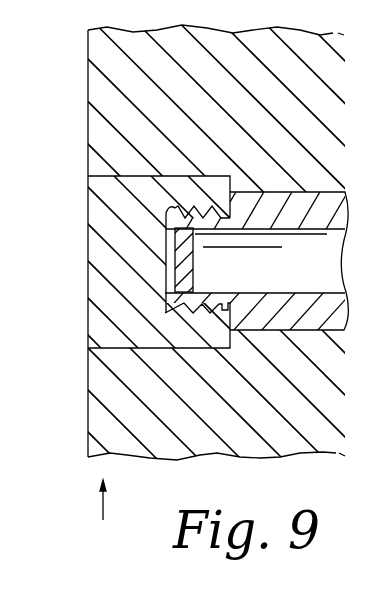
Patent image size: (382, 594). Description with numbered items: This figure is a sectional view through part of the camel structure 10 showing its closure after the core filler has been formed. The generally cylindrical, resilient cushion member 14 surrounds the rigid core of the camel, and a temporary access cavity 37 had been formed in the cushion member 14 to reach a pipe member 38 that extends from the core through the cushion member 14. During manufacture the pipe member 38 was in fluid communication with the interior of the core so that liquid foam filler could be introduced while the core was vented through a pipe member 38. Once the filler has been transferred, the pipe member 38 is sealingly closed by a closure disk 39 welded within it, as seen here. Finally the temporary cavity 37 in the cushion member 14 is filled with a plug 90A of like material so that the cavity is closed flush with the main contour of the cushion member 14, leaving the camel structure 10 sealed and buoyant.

The camel structure 10 is at (105, 514).
The cushion member 14 is at (117, 65).
The temporary access cavity 37 is at (143, 177).
The pipe member 38 is at (298, 192).
The closure disk 39 is at (190, 263).
The plug 90A is at (88, 305).